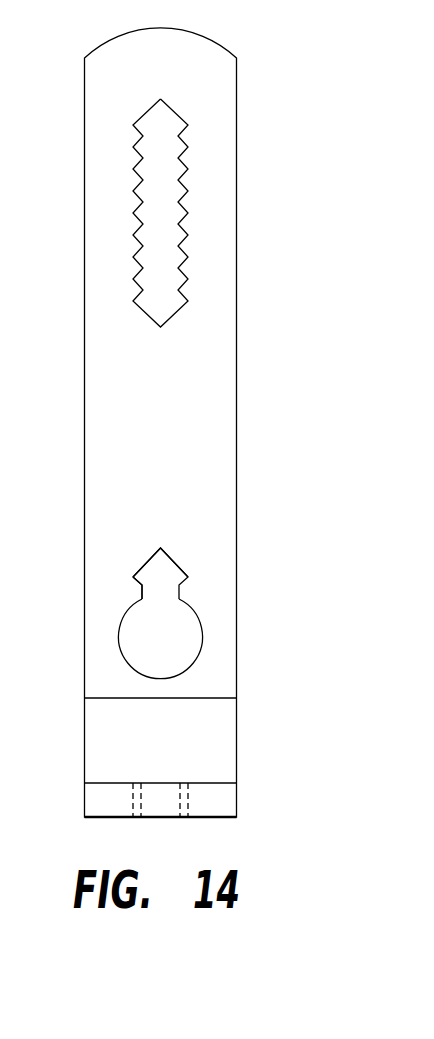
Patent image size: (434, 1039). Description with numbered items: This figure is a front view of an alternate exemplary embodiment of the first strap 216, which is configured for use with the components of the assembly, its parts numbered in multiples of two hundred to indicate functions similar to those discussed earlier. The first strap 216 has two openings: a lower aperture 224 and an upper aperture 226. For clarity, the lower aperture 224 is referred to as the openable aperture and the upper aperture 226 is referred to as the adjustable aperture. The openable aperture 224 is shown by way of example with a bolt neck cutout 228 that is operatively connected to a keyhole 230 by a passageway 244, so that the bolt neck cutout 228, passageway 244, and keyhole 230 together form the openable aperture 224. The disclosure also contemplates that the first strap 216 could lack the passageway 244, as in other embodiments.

The first strap 216 is at (239, 376).
The upper aperture 226 is at (190, 203).
The lower aperture 224 is at (172, 603).
The bolt neck cutout 228 is at (143, 562).
The passageway 244 is at (142, 593).
The keyhole 230 is at (120, 655).